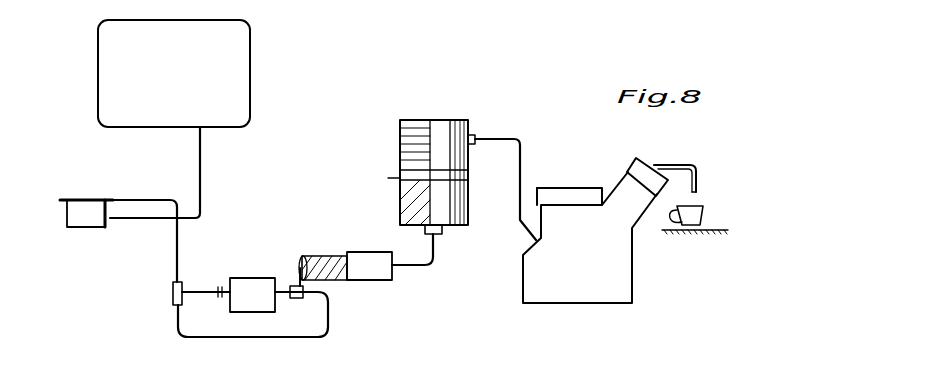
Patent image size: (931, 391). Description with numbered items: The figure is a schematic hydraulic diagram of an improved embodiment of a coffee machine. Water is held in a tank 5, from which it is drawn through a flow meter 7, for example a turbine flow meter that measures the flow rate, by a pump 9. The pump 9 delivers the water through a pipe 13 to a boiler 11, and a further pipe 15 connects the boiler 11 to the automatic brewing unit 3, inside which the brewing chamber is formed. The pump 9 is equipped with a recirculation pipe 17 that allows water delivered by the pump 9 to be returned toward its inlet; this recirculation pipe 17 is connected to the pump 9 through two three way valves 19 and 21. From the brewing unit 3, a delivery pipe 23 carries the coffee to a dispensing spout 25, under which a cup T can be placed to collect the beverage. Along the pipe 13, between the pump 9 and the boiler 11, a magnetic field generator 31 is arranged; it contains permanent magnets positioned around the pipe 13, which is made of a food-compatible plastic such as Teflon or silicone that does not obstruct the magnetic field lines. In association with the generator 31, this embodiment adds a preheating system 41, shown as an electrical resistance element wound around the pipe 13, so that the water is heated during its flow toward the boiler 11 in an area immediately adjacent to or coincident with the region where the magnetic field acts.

The automatic brewing unit 3 is at (615, 272).
The tank 5 is at (252, 62).
The flow meter 7 is at (93, 226).
The pump 9 is at (252, 285).
The boiler 11 is at (424, 118).
The pipe 13 is at (414, 268).
The pipe 15 is at (500, 136).
The recirculation pipe 17 is at (226, 334).
The three way valve 19 is at (300, 299).
The three way valve 21 is at (172, 294).
The delivery pipe 23 is at (670, 162).
The dispensing spout 25 is at (702, 182).
The magnetic field generator 31 is at (368, 252).
The preheating system 41 is at (322, 255).
The cup T is at (704, 213).